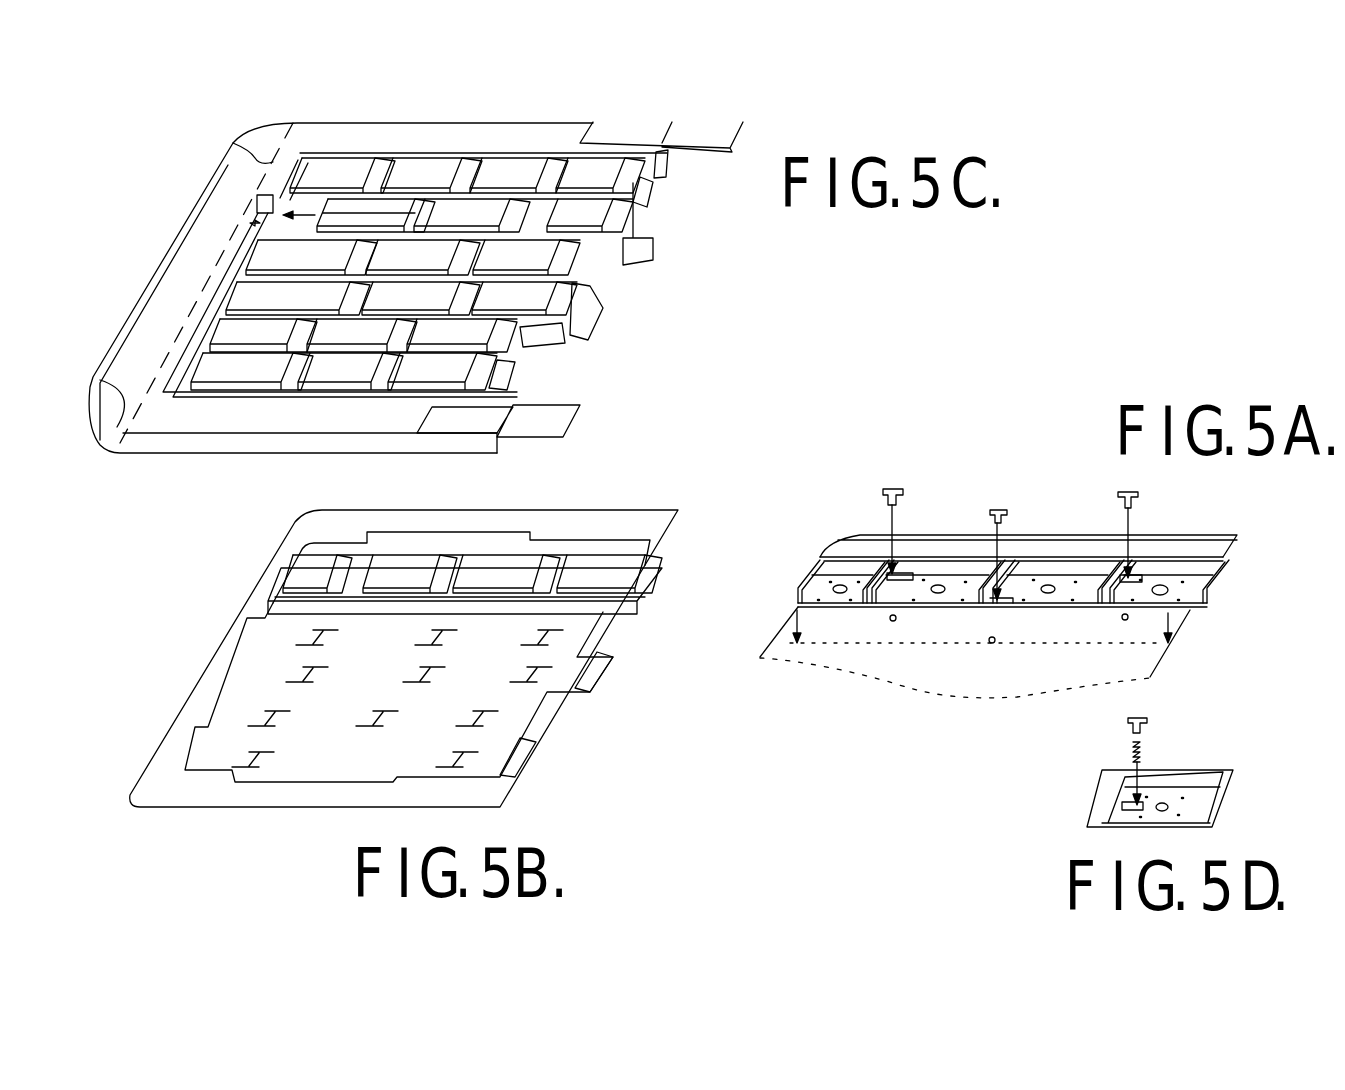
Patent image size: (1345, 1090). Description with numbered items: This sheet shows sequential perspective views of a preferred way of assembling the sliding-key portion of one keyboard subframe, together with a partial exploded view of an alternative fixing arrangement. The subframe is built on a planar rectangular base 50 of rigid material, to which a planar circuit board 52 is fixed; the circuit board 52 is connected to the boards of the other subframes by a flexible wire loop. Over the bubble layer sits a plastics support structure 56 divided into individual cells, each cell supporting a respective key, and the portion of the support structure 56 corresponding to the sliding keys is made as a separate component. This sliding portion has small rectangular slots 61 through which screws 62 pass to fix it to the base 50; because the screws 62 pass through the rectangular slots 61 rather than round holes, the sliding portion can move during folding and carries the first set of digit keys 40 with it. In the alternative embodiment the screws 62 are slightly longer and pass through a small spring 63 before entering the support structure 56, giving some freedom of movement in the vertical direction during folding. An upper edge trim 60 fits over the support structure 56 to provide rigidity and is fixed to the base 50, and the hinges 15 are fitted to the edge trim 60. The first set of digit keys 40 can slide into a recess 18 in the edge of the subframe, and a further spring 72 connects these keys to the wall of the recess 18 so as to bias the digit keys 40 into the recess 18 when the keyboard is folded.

In FIG. 5C, the hinge 15 is at (720, 120).
In FIG. 5C, the recess 18 is at (250, 223).
In FIG. 5C, the first set of digit keys 40 is at (600, 217).
In FIG. 5B, the first set of digit keys 40 is at (597, 570).
In FIG. 5B, the base 50 is at (160, 793).
In FIG. 5B, the circuit board 52 is at (313, 760).
In FIG. 5B, the support structure 56 is at (647, 588).
In FIG. 5A, the support structure 56 is at (1217, 583).
In FIG. 5D, the support structure 56 is at (1160, 798).
In FIG. 5C, the upper edge trim 60 is at (432, 137).
In FIG. 5A, the rectangular slot 61 is at (907, 577).
In FIG. 5A, the screw 62 is at (1127, 490).
In FIG. 5D, the screw 62 is at (1140, 720).
In FIG. 5D, the spring 63 is at (1142, 750).
In FIG. 5C, the spring 72 is at (257, 205).